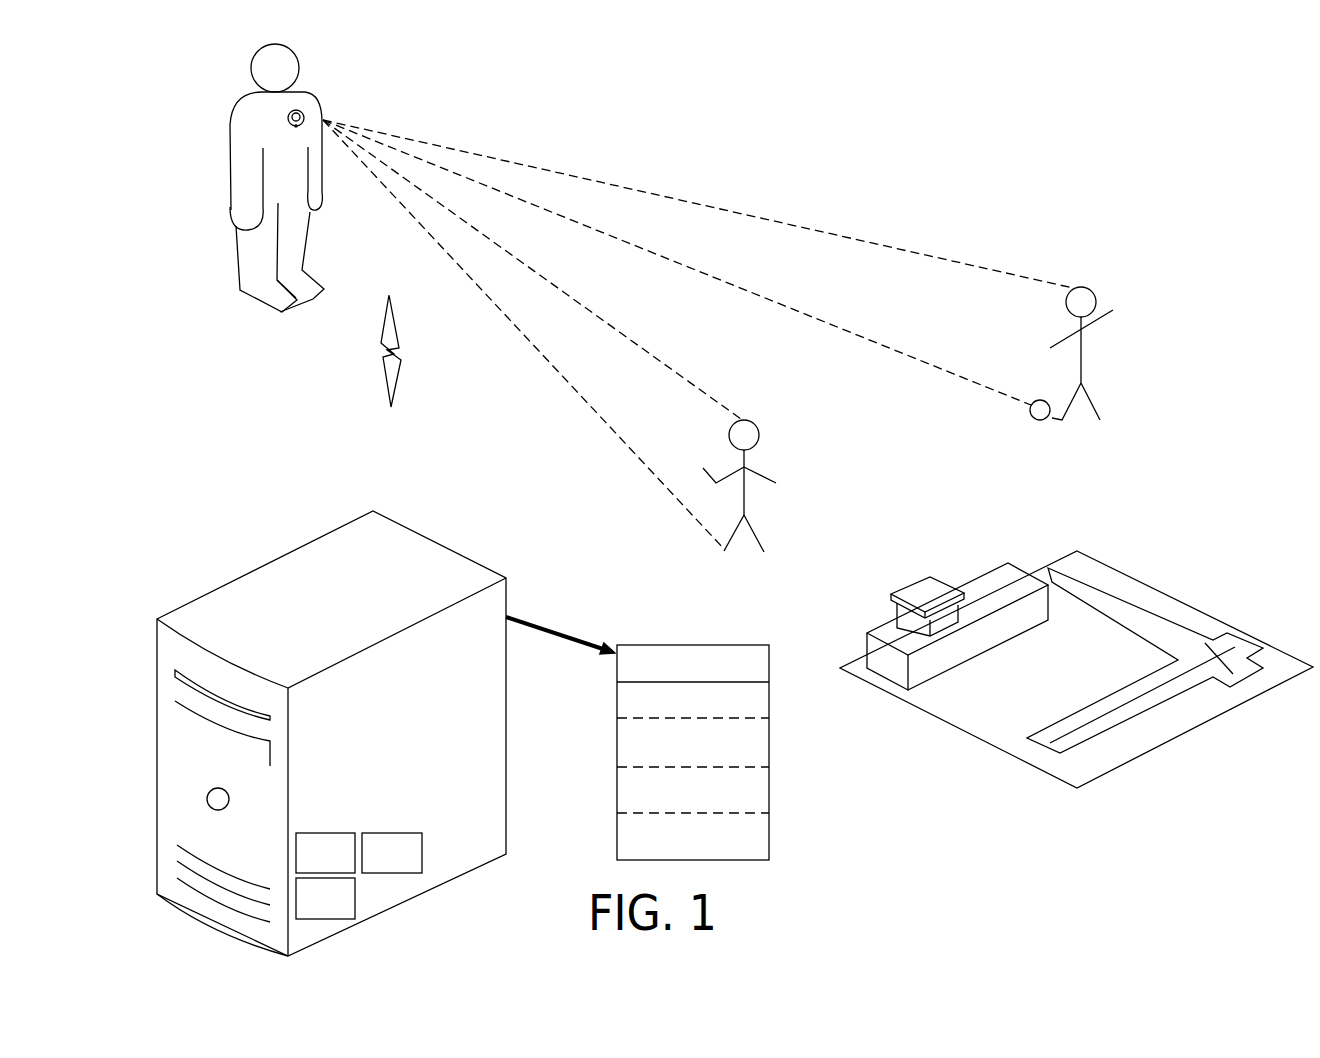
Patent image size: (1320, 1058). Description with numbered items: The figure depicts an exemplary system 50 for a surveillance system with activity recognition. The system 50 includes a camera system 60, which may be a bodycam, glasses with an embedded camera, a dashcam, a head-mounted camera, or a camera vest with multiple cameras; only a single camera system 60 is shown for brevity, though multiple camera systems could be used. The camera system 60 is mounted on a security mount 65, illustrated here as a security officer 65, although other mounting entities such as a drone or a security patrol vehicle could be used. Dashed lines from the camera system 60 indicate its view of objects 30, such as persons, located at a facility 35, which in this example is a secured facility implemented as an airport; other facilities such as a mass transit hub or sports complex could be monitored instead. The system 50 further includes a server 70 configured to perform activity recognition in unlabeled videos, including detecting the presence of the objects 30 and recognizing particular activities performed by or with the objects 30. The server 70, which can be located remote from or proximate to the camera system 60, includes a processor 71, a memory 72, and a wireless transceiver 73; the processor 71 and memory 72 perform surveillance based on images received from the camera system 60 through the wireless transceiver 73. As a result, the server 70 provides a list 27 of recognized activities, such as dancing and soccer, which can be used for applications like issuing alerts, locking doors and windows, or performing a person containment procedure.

The security mount 65 is at (231, 70).
The camera system 60 is at (318, 98).
The system 50 is at (1112, 142).
The objects 30 is at (755, 406).
The facility 35 is at (1155, 575).
The list 27 is at (786, 664).
The server 70 is at (327, 634).
The processor 71 is at (311, 867).
The memory 72 is at (378, 867).
The wireless transceiver 73 is at (311, 913).